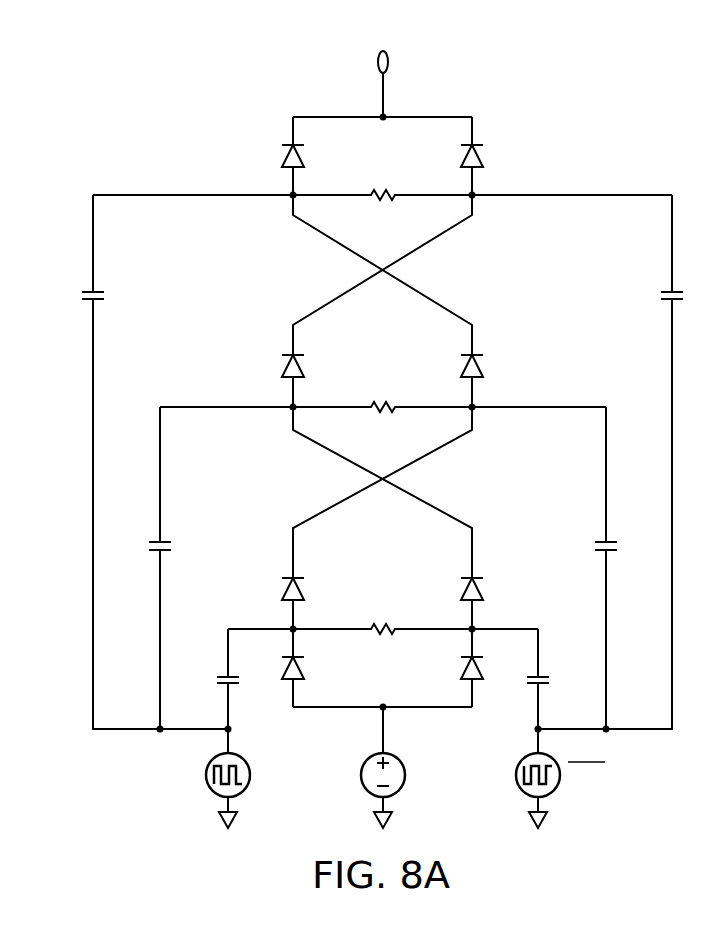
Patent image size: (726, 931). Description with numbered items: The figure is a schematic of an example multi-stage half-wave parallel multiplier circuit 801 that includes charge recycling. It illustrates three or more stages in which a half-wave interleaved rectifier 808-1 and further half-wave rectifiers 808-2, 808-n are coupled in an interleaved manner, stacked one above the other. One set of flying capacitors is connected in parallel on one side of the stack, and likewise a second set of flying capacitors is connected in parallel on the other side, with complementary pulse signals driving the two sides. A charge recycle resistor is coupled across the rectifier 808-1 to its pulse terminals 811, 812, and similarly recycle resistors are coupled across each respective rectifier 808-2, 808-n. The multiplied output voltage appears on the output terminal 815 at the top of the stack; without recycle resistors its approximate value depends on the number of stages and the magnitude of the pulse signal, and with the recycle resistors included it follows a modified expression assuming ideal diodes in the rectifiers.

The multi-stage half-wave parallel multiplier circuit 801 is at (246, 69).
The output terminal 815 is at (389, 58).
The half-wave rectifier 808-n is at (267, 130).
The half-wave rectifier 808-2 is at (493, 320).
The half-wave interleaved rectifier 808-1 is at (267, 533).
The pulse terminal 811 is at (297, 635).
The pulse terminal 812 is at (468, 635).